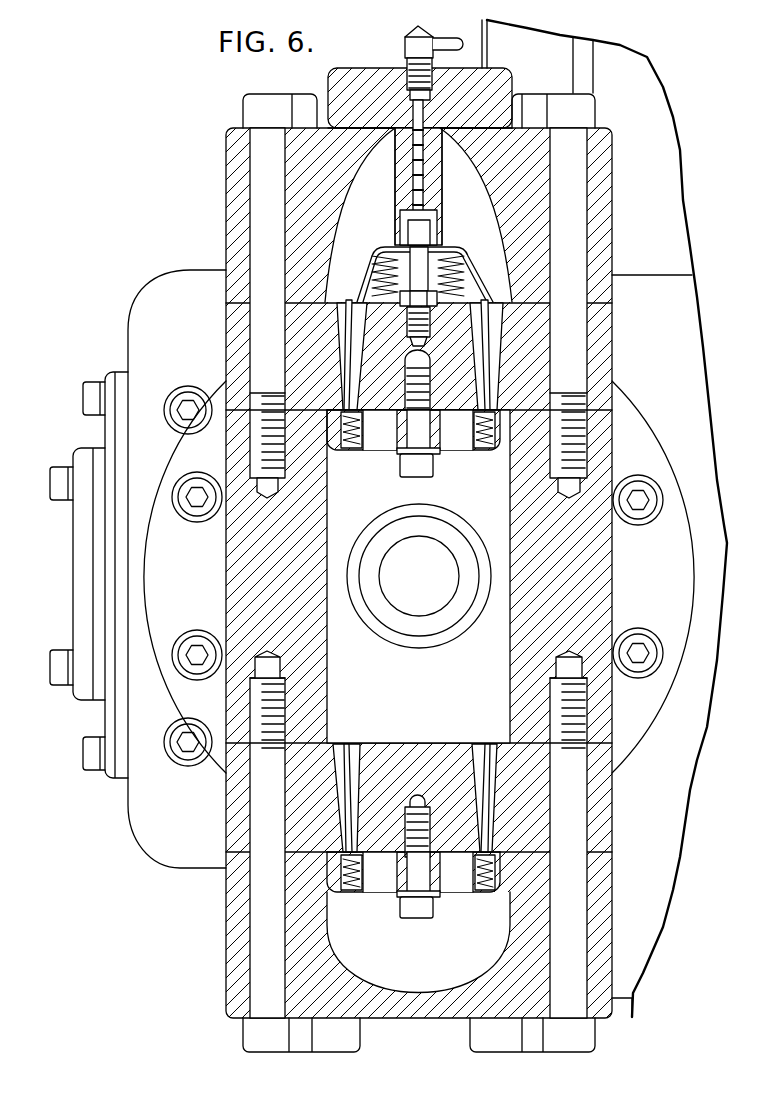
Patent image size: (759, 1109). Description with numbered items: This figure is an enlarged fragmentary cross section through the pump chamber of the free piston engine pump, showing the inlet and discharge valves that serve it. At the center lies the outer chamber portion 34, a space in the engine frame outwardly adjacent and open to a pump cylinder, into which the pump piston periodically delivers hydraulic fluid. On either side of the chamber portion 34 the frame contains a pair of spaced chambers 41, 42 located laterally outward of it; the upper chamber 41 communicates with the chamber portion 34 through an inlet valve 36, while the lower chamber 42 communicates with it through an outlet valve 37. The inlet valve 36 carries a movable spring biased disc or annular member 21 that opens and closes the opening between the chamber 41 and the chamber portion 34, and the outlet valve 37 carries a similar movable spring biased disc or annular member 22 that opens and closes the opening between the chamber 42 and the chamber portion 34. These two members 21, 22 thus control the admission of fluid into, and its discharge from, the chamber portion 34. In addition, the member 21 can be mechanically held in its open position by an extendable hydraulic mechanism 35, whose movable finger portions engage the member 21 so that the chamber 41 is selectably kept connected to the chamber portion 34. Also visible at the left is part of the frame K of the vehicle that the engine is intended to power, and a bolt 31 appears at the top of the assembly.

The adjusting bolt 31 is at (443, 43).
The chamber 41 is at (476, 218).
The extendable hydraulic mechanism 35 is at (352, 282).
The movable spring biased disc or annular member 21 is at (495, 410).
The inlet valve 36 is at (373, 439).
The outer chamber portion 34 is at (493, 642).
The outlet valve 37 is at (372, 885).
The movable spring biased disc or annular member 22 is at (496, 852).
The chamber 42 is at (463, 950).
The frame K is at (143, 296).